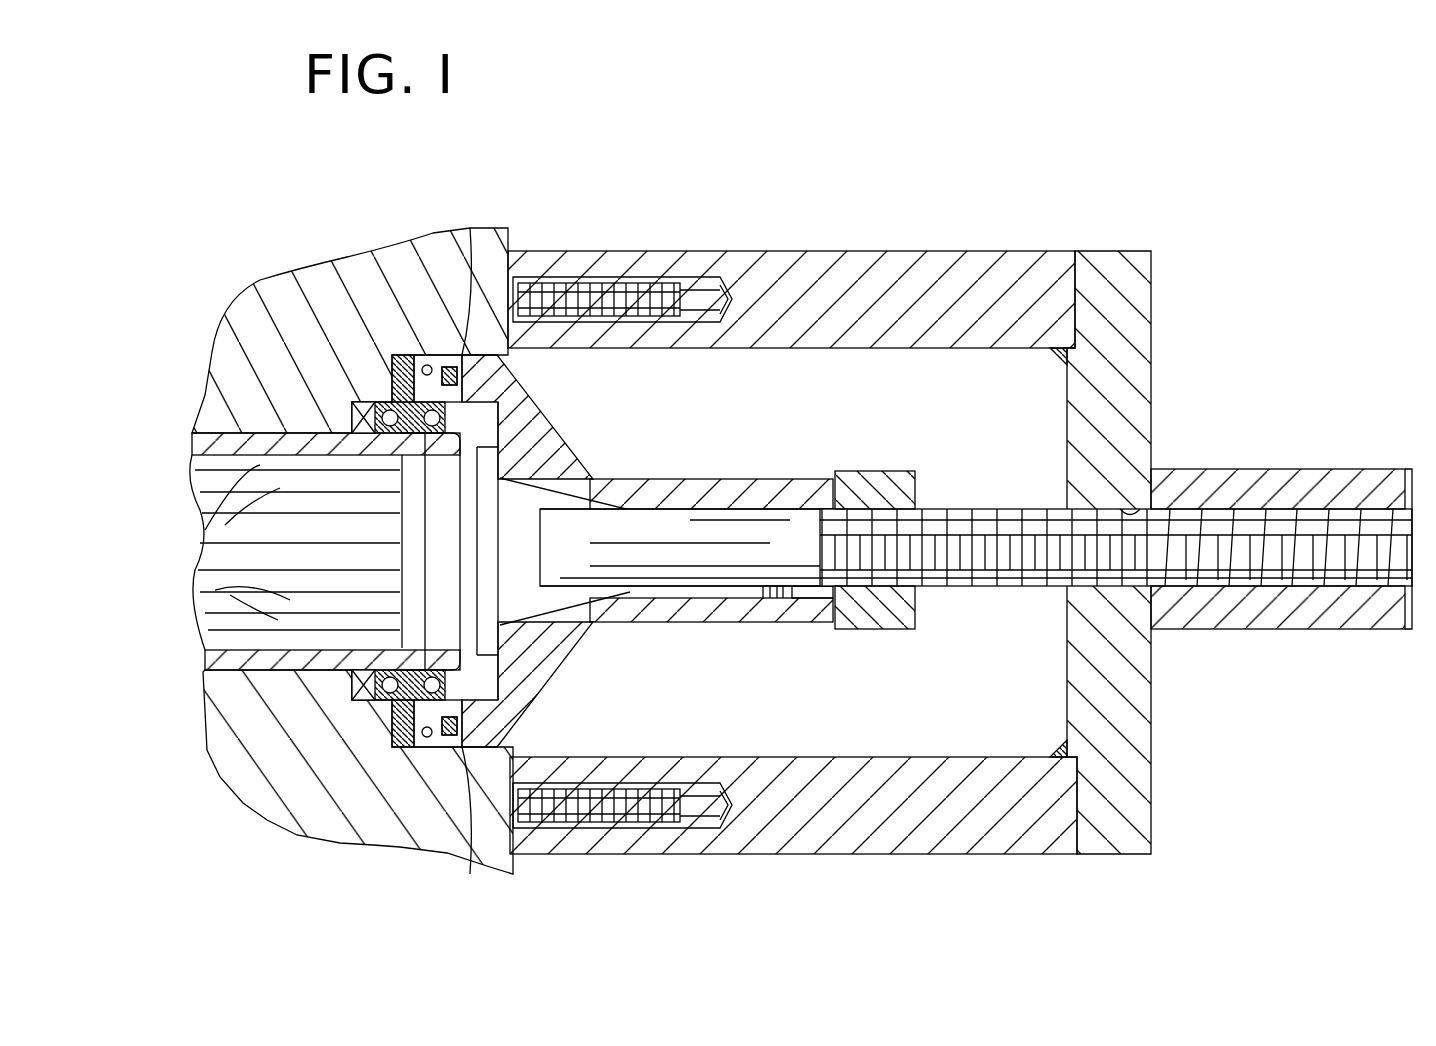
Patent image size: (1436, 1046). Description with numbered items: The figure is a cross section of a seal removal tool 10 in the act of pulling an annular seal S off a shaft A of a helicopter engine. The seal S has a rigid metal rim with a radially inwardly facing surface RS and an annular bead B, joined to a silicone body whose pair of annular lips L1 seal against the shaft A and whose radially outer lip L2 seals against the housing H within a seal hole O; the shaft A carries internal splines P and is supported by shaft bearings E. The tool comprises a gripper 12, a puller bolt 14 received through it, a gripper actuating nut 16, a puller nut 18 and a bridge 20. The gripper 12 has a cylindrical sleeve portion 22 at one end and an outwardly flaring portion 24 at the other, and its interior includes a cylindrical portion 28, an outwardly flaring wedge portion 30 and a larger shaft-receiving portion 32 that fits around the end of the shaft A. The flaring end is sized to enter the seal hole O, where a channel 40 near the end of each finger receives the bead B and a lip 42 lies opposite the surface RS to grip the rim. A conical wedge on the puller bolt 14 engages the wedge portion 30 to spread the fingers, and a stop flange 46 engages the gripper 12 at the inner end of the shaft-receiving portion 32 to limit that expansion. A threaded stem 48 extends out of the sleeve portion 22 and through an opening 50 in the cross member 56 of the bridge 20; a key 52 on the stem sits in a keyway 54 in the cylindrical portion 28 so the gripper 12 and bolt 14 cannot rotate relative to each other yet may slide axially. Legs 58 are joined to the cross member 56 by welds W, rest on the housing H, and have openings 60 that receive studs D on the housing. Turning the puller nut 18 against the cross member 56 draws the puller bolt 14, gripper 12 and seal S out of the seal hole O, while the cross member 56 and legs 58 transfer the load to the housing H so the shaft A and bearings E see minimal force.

The seal removal tool 10 is at (1268, 312).
The gripper 12 is at (715, 452).
The puller bolt 14 is at (978, 505).
The gripper actuating nut 16 is at (890, 632).
The puller nut 18 is at (1280, 632).
The bridge 20 is at (1090, 875).
The sleeve portion 22 is at (645, 622).
The outwardly flaring portion 24 is at (640, 400).
The cylindrical portion 28 is at (712, 510).
The wedge portion 30 is at (590, 495).
The shaft-receiving portion 32 is at (520, 410).
The channel 40 is at (458, 370).
The lip 42 is at (392, 845).
The stop flange 46 is at (520, 600).
The stem 48 is at (990, 508).
The opening 50 is at (1150, 506).
The key 52 is at (768, 604).
The keyway 54 is at (815, 604).
The cross member 56 is at (1118, 748).
The legs 58 is at (960, 280).
The openings 60 is at (685, 300).
The annular seal S is at (330, 292).
The housing H is at (508, 232).
The annular bead B is at (462, 352).
The radially inwardly facing surface RS is at (400, 352).
The radially outer lip L2 is at (378, 392).
The annular lips L1 is at (392, 455).
The studs D is at (600, 285).
The shaft A is at (265, 433).
The welds W is at (1058, 358).
The splines P is at (270, 520).
The shaft bearings E is at (293, 805).
The seal hole O is at (448, 857).